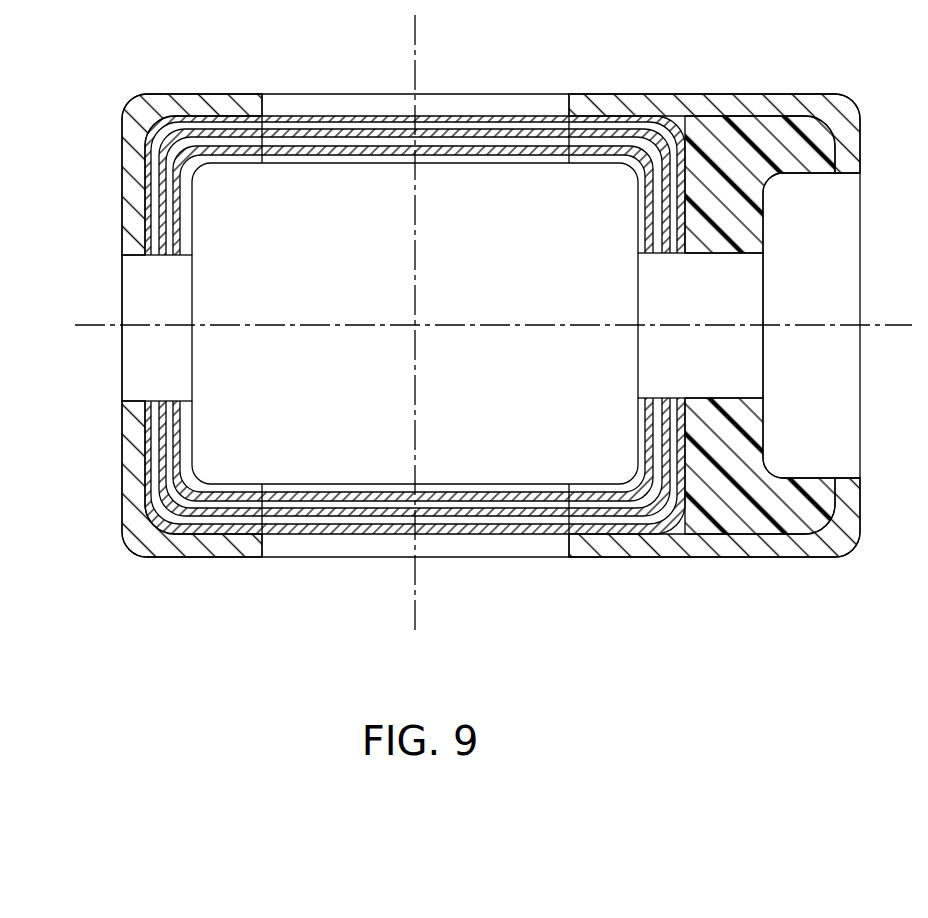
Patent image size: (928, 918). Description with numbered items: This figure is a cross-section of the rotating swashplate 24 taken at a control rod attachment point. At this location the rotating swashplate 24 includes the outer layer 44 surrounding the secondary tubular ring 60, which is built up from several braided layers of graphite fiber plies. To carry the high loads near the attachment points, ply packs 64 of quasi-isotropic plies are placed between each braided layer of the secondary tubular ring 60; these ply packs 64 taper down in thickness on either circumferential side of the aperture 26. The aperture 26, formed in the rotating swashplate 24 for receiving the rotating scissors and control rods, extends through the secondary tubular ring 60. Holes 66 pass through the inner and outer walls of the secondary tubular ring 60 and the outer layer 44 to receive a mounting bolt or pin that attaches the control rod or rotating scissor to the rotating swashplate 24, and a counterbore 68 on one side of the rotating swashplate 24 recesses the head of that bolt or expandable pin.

The rotating swashplate 24 is at (737, 558).
The slotted aperture 26 is at (566, 106).
The outer layer 44 is at (614, 548).
The secondary tubular ring 60 is at (468, 148).
The ply pack 64 is at (356, 153).
The hole 66 is at (123, 400).
The counterbore 68 is at (818, 176).